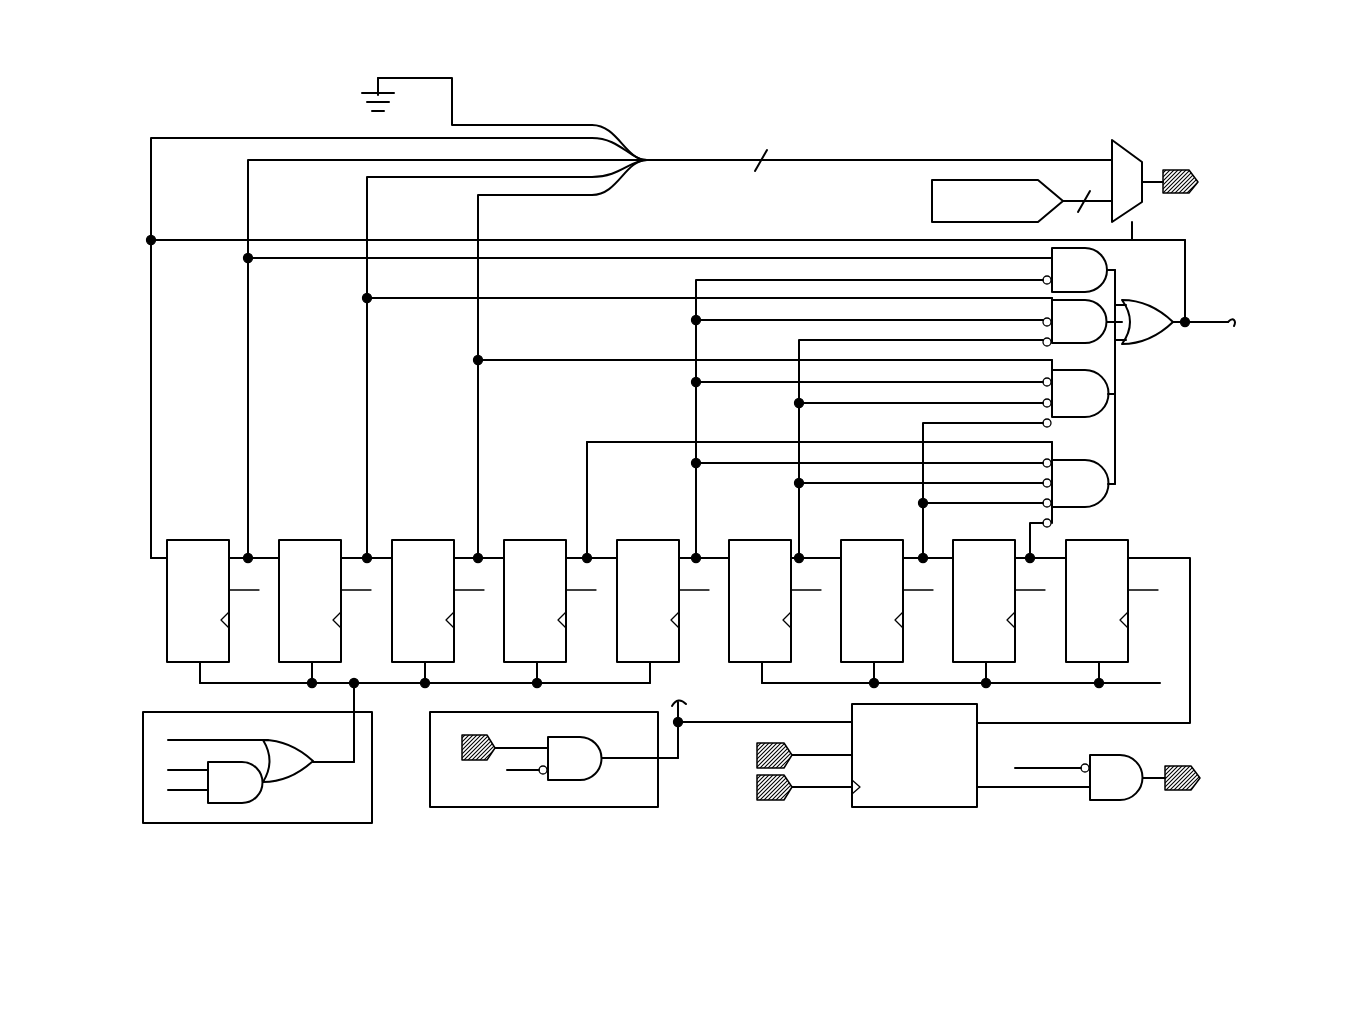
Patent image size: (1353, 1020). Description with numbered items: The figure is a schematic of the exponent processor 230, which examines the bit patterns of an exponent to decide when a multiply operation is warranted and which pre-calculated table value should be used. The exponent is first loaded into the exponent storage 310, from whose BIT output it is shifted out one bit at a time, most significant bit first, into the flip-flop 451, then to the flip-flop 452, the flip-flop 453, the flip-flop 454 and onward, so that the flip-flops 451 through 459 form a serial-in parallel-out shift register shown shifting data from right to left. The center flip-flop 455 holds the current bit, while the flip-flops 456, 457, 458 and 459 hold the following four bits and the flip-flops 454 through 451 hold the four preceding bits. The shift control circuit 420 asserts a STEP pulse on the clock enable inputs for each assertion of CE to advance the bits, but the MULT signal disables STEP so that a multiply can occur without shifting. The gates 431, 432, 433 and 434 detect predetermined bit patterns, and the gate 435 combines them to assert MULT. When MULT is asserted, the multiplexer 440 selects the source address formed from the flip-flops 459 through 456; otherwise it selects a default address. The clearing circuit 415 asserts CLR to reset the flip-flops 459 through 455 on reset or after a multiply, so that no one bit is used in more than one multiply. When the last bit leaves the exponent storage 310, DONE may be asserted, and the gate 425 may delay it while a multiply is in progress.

The exponent processor 230 is at (678, 88).
The exponent storage 310 is at (980, 800).
The clearing circuit 415 is at (320, 823).
The shift control circuit 420 is at (462, 808).
The gate 425 is at (1115, 802).
The gate 431 is at (1079, 493).
The gate 432 is at (1079, 398).
The gate 433 is at (1082, 323).
The gate 434 is at (1079, 270).
The gate 435 is at (1147, 322).
The multiplexer 440 is at (1128, 150).
The flip-flop 451 is at (1081, 540).
The flip-flop 452 is at (968, 540).
The flip-flop 453 is at (856, 540).
The flip-flop 454 is at (744, 540).
The center flip-flop 455 is at (632, 540).
The flip-flop 456 is at (519, 540).
The flip-flop 457 is at (407, 540).
The flip-flop 458 is at (294, 540).
The flip-flop 459 is at (182, 540).